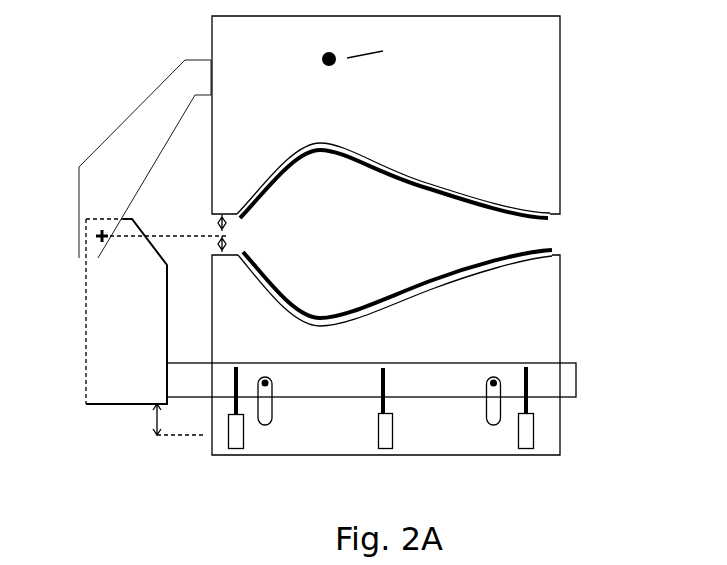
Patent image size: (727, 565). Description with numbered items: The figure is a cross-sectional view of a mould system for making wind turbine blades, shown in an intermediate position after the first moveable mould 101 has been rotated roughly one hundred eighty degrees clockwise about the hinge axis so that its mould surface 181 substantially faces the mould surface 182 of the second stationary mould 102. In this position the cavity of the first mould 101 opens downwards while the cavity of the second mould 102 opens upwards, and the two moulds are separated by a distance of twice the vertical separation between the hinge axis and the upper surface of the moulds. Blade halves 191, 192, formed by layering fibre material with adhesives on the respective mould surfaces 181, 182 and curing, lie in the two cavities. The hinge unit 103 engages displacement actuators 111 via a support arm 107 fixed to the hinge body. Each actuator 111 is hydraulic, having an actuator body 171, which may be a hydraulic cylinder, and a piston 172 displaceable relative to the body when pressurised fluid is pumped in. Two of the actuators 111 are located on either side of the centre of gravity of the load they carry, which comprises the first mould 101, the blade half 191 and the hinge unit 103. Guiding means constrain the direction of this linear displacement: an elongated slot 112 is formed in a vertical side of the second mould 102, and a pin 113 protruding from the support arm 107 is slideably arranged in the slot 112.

The first moveable mould 101 is at (565, 68).
The second stationary mould 102 is at (565, 295).
The hinge unit 103 is at (63, 137).
The support arm 107 is at (580, 382).
The displacement actuator 111 is at (247, 432).
The elongated slot 112 is at (270, 403).
The pin 113 is at (265, 382).
The actuator body 171 is at (528, 427).
The piston 172 is at (529, 404).
The mould surface 181 is at (442, 182).
The mould surface 182 is at (513, 268).
The blade half 191 is at (273, 188).
The blade half 192 is at (345, 312).